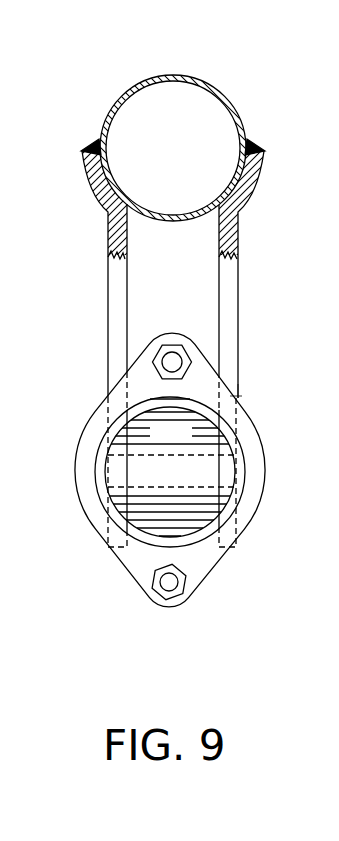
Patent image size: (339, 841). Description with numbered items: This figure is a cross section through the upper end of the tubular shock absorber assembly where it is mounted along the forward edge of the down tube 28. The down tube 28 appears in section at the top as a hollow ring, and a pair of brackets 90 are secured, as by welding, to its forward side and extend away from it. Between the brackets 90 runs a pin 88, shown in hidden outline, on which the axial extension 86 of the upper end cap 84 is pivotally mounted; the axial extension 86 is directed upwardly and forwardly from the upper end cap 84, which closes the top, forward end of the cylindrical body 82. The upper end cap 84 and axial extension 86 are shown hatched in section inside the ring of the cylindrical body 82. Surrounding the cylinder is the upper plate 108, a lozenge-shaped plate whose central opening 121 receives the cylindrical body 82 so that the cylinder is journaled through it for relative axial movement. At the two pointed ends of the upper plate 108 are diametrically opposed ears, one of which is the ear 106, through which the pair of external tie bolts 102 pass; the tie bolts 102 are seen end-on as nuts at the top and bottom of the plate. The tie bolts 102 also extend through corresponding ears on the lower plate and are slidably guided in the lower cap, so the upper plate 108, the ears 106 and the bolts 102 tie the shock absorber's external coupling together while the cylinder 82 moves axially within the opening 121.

The down tube 28 is at (226, 93).
The brackets 90 is at (120, 280).
The external tie bolts 102 is at (172, 357).
The ear 106 is at (152, 605).
The upper plate 108 is at (170, 389).
The central opening 121 is at (236, 398).
The cylindrical body 82 is at (240, 444).
The upper end cap 84 is at (224, 495).
The axial extension 86 is at (188, 483).
The pin 88 is at (130, 458).